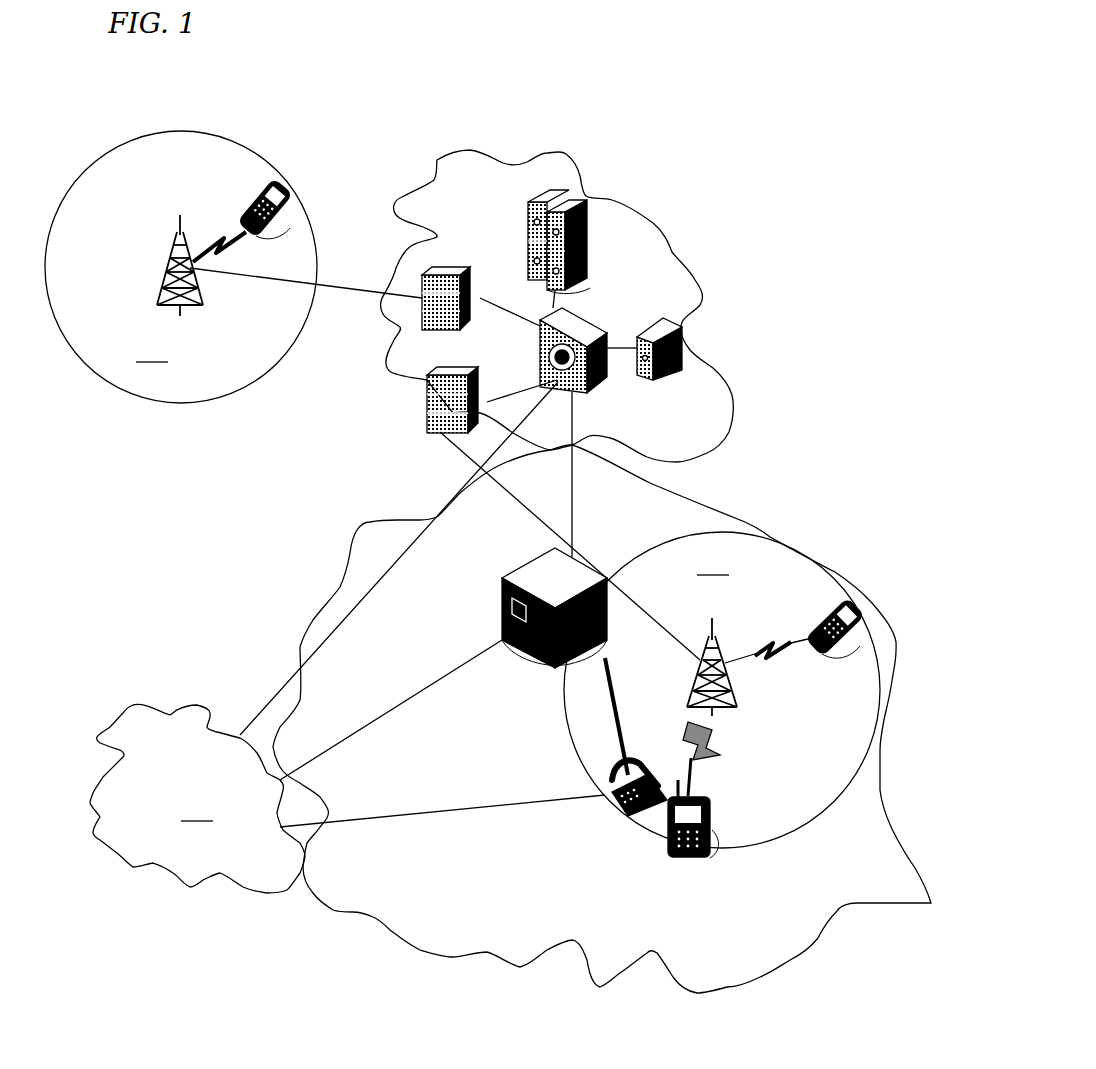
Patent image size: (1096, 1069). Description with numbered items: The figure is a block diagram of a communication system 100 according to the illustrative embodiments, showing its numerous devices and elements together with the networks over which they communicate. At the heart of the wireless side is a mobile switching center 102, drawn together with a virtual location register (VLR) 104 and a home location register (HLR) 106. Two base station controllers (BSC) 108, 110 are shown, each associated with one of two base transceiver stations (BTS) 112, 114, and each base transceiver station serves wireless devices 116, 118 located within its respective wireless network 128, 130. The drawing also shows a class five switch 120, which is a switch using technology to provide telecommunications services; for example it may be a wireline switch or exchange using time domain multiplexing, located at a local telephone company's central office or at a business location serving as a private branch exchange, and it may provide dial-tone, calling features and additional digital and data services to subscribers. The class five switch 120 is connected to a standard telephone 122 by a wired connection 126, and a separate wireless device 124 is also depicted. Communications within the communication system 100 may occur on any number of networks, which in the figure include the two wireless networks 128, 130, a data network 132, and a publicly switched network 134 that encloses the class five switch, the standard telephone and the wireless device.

The communication system 100 is at (557, 268).
The mobile switching center 102 is at (603, 390).
The virtual location register (VLR) 104 is at (690, 318).
The home location register (HLR) 106 is at (583, 203).
The base station controller (BSC) 108 is at (442, 275).
The base station controller (BSC) 110 is at (427, 415).
The base transceiver station (BTS) 112 is at (180, 280).
The base transceiver station (BTS) 114 is at (723, 640).
The wireless devices 116 is at (277, 187).
The wireless devices 118 is at (858, 648).
The class 5 switch 120 is at (502, 637).
The standard telephone 122 is at (630, 813).
The wireless device 124 is at (720, 830).
The wired connection 126 is at (613, 690).
The wireless network 128 is at (181, 267).
The wireless network 130 is at (722, 690).
The data network 132 is at (197, 798).
The publicly switched network 134 is at (602, 719).